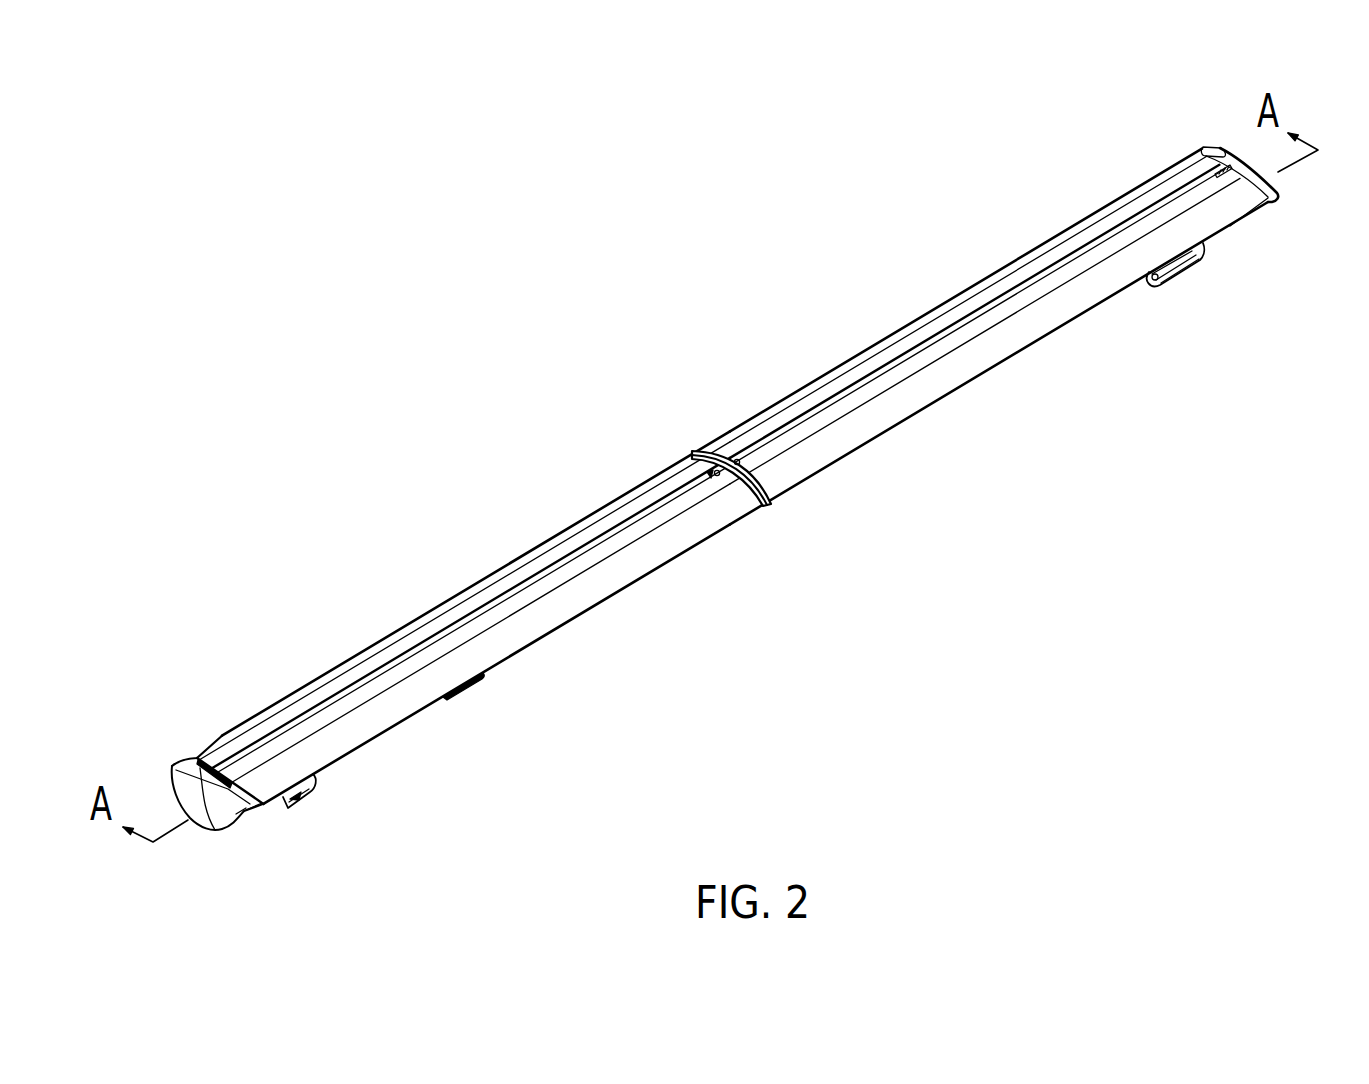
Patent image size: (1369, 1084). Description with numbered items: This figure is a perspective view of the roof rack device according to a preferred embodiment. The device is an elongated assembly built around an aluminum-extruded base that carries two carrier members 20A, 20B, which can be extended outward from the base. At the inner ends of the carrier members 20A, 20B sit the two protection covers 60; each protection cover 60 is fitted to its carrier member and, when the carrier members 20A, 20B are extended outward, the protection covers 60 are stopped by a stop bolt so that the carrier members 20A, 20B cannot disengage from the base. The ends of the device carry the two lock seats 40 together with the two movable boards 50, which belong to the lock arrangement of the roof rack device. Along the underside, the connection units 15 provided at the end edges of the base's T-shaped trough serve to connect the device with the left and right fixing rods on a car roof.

The connection unit 15 is at (313, 792).
The carrier member 20A is at (522, 637).
The carrier member 20B is at (997, 355).
The lock seat 40 is at (254, 807).
The movable board 50 is at (205, 813).
The protection cover 60 is at (763, 503).